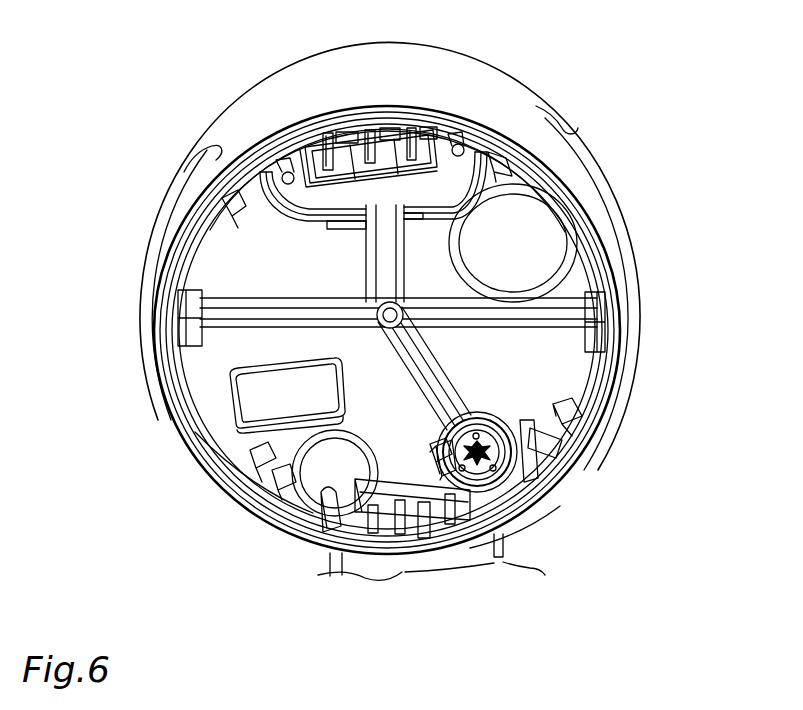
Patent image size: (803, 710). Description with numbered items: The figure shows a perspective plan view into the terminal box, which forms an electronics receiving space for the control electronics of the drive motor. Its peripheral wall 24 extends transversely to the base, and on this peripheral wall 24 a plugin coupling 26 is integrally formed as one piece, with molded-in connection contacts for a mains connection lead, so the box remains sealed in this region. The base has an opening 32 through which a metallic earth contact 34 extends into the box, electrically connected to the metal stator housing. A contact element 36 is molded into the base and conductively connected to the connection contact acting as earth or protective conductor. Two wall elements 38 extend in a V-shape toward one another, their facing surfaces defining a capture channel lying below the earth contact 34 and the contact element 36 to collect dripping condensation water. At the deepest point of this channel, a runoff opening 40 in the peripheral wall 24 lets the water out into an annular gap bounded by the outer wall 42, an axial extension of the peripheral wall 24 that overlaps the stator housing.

The peripheral wall 24 is at (225, 455).
The plugin coupling 26 is at (505, 548).
The opening 32 is at (482, 446).
The earth contact 34 is at (533, 470).
The contact element 36 is at (478, 442).
The wall elements 38 is at (583, 433).
The runoff opening 40 is at (518, 520).
The outer wall 42 is at (482, 88).